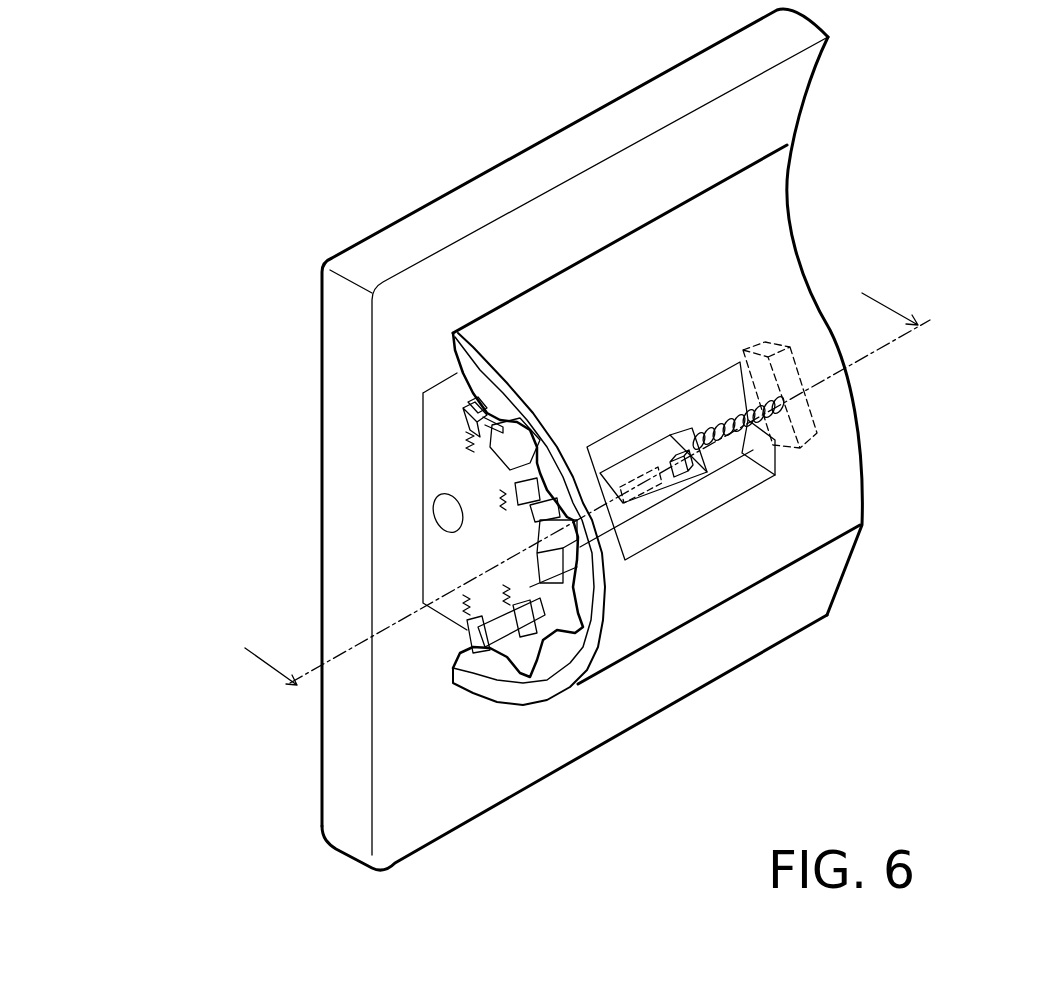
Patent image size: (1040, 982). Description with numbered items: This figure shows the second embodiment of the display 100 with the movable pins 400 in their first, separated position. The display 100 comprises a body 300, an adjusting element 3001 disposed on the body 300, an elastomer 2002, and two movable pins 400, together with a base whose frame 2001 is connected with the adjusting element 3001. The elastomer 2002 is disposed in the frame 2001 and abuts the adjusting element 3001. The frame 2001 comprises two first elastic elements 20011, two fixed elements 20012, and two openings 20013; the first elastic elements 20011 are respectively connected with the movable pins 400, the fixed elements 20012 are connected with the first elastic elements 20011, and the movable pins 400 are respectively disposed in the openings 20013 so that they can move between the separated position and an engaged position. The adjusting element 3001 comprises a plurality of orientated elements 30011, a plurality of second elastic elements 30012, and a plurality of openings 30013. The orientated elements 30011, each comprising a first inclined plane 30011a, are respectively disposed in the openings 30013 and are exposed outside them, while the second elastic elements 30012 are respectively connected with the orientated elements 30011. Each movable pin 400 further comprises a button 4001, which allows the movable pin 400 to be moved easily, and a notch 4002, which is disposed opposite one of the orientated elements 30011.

The display 100 is at (226, 52).
The body 300 is at (355, 515).
The adjusting element 3001 is at (440, 562).
The orientated elements 30011 is at (458, 395).
The first inclined plane 30011a is at (487, 410).
The second elastic elements 30012 is at (460, 455).
The openings 30013 is at (460, 433).
The frame 2001 is at (613, 642).
The elastomer 2002 is at (553, 648).
The first elastic elements 20011 is at (775, 477).
The fixed elements 20012 is at (808, 414).
The openings 20013 is at (698, 390).
The movable pins 400 is at (657, 457).
The button 4001 is at (683, 472).
The notch 4002 is at (643, 488).